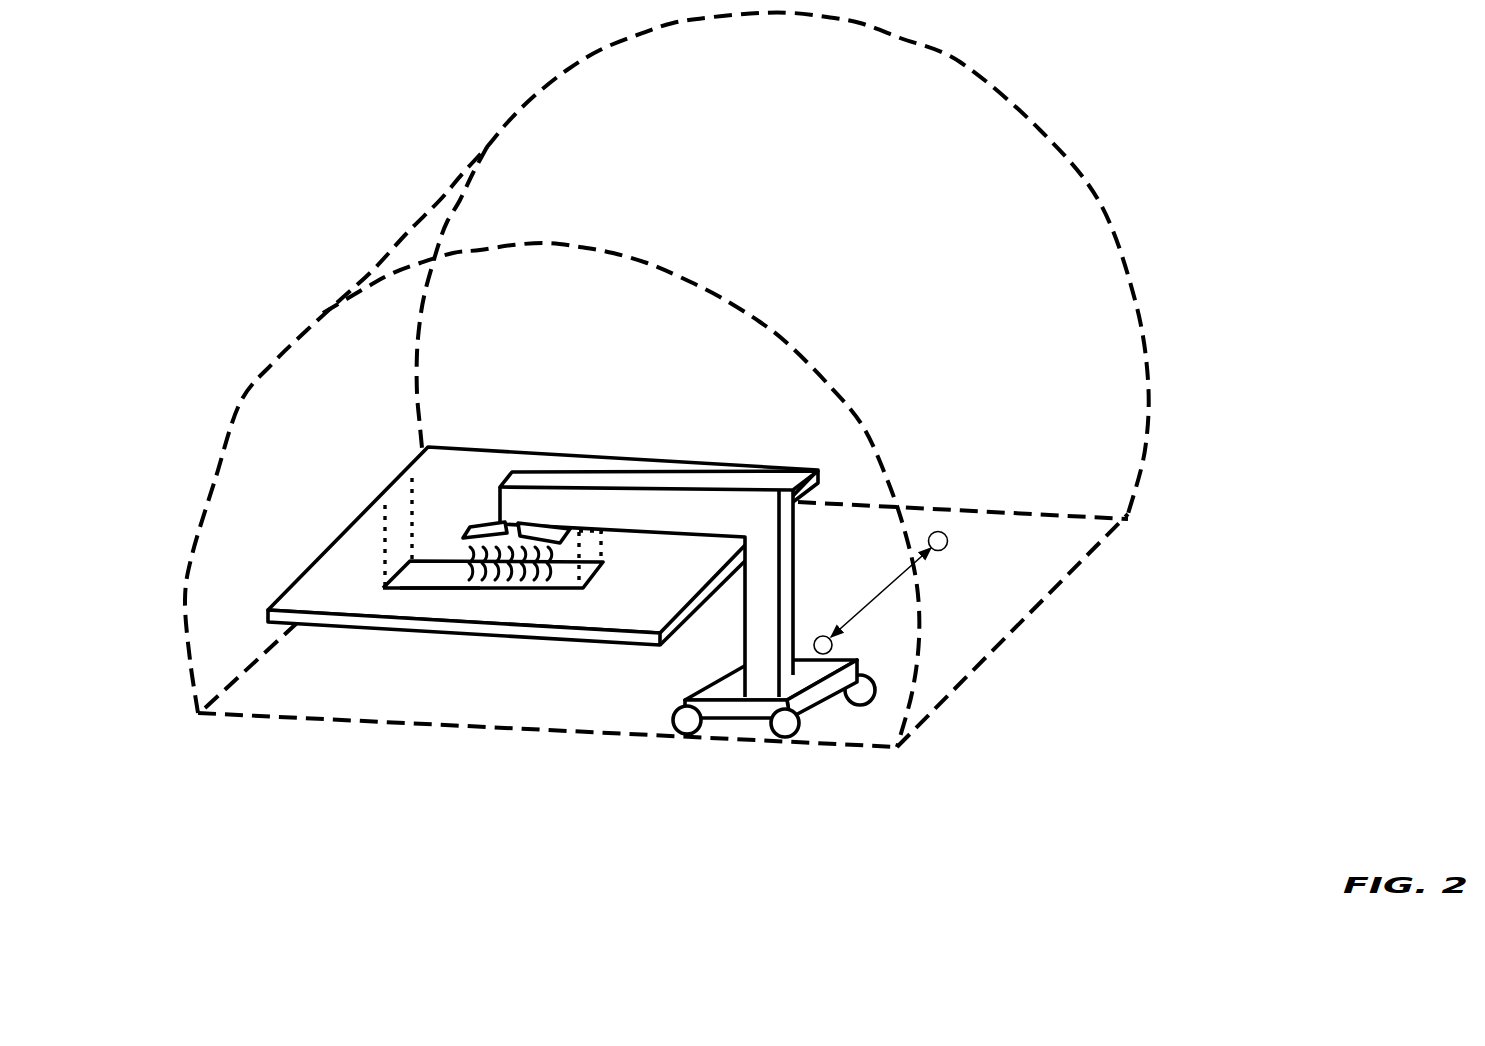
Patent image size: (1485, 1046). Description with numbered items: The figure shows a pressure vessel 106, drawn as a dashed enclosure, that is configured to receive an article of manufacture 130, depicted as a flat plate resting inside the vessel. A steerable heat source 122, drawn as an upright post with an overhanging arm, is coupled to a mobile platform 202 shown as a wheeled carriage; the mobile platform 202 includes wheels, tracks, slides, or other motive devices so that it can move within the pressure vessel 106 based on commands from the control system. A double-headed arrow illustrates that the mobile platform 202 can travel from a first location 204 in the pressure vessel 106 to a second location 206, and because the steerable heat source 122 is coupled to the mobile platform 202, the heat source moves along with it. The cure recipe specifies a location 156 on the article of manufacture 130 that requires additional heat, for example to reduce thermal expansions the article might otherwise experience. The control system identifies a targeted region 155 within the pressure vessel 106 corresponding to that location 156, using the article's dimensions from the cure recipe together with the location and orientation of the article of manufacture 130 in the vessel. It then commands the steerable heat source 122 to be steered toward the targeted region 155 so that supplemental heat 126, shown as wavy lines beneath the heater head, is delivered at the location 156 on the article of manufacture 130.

The pressure vessel 106 is at (1100, 203).
The article of manufacture 130 is at (483, 470).
The targeted region 155 is at (383, 562).
The location 156 is at (437, 589).
The supplemental heat 126 is at (462, 551).
The steerable heat source 122 is at (794, 575).
The mobile platform 202 is at (810, 708).
The first location 204 is at (947, 537).
The second location 206 is at (831, 645).